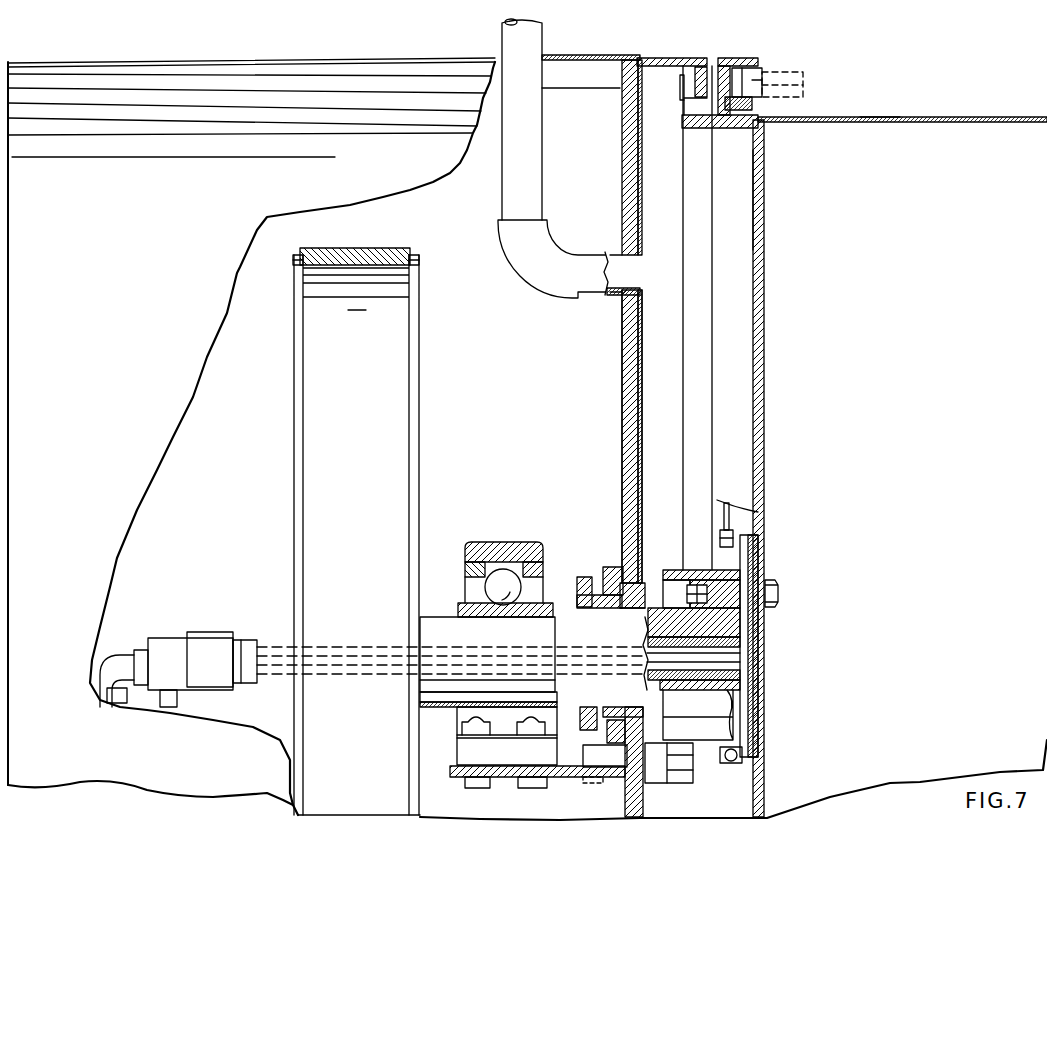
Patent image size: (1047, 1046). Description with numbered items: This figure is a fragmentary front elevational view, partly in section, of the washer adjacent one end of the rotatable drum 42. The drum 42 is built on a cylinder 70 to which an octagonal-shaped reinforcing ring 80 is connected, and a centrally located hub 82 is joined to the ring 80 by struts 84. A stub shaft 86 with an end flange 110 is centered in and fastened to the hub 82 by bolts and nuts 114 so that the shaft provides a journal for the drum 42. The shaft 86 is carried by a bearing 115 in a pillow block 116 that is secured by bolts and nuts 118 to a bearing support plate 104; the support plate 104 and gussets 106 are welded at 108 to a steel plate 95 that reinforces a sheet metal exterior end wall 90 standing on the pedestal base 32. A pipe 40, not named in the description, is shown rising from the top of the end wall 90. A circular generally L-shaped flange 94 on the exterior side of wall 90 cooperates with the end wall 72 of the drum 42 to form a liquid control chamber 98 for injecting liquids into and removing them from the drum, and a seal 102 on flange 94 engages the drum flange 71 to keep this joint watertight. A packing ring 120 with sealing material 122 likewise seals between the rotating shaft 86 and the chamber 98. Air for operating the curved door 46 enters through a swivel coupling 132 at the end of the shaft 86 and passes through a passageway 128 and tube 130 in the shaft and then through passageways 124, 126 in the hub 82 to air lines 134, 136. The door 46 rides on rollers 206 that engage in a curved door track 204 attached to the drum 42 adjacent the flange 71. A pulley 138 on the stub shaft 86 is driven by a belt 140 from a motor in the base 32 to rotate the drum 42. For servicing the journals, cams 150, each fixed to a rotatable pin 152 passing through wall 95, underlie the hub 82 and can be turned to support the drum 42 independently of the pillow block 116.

The pedestal base 32 is at (268, 55).
The pipe 40 is at (502, 35).
The drum 42 is at (982, 112).
The door 46 is at (792, 97).
The cylinder 70 is at (883, 117).
The drum flange 71 is at (678, 100).
The end wall 72 is at (764, 272).
The octagonal-shaped reinforcing ring 80 is at (735, 130).
The hub 82 is at (670, 570).
The struts 84 is at (745, 222).
The stub shaft 86 is at (563, 617).
The exterior end wall 90 is at (637, 212).
The L-shaped flange 94 is at (712, 70).
The steel plate 95 is at (622, 333).
The liquid control chamber 98 is at (651, 358).
The seal 102 is at (700, 95).
The bearing support plate 104 is at (455, 770).
The gusset 106 is at (470, 812).
The weld 108 is at (530, 789).
The end flange 110 is at (707, 570).
The bolts and nuts 114 is at (778, 592).
The bearing 115 is at (467, 570).
The pillow block 116 is at (500, 542).
The bolts and nuts 118 is at (478, 789).
The packing ring 120 is at (610, 548).
The sealing material 122 is at (645, 612).
The passageway 124 is at (764, 700).
The passageway 126 is at (760, 625).
The passageway 128 is at (652, 676).
The tube 130 is at (650, 634).
The swivel coupling 132 is at (240, 600).
The air line 134 is at (730, 763).
The air line 136 is at (733, 521).
The pulley 138 is at (300, 342).
The belt 140 is at (373, 247).
The cam 150 is at (676, 783).
The rotatable pin 152 is at (643, 783).
The door track 204 is at (720, 64).
The roller 206 is at (787, 77).